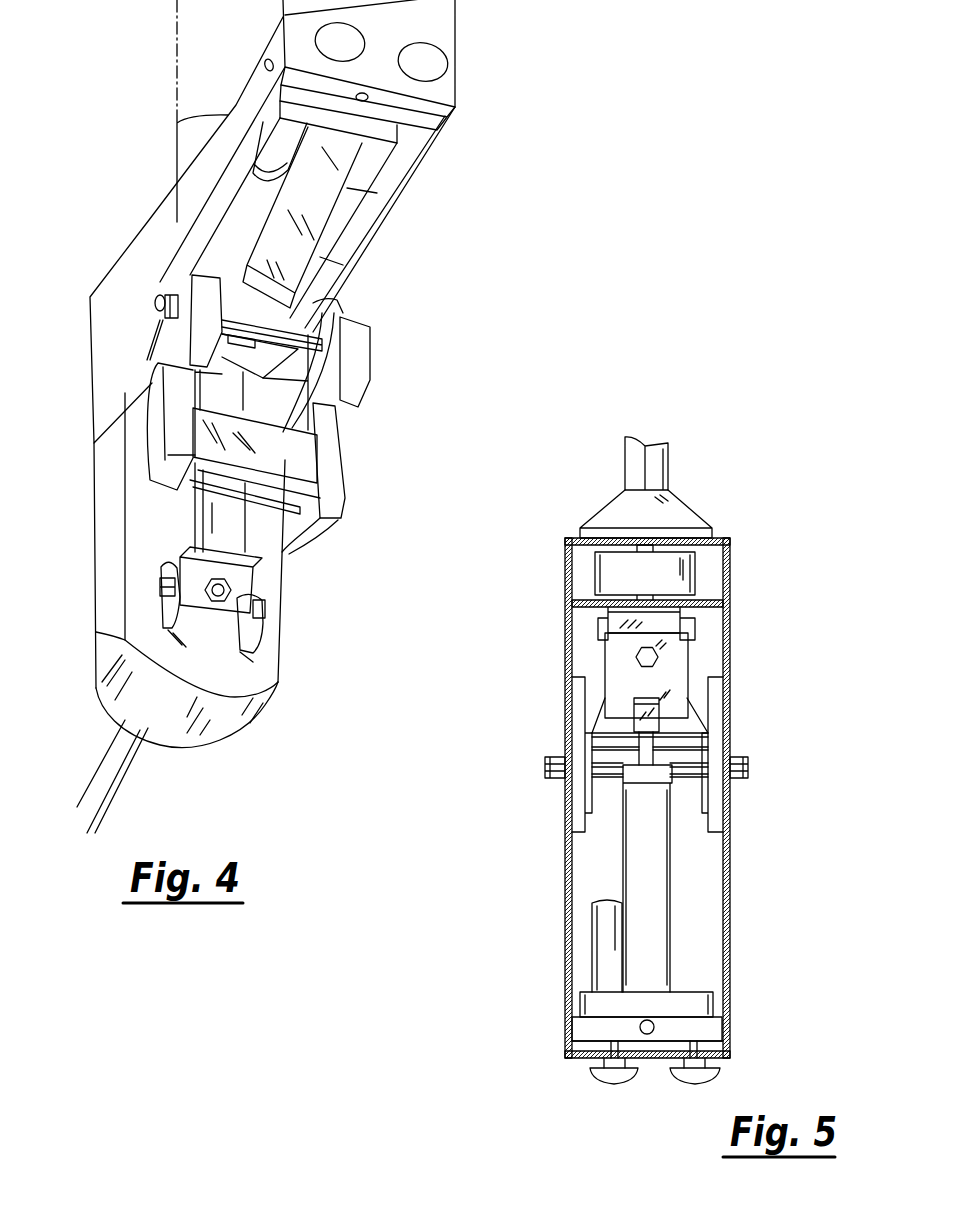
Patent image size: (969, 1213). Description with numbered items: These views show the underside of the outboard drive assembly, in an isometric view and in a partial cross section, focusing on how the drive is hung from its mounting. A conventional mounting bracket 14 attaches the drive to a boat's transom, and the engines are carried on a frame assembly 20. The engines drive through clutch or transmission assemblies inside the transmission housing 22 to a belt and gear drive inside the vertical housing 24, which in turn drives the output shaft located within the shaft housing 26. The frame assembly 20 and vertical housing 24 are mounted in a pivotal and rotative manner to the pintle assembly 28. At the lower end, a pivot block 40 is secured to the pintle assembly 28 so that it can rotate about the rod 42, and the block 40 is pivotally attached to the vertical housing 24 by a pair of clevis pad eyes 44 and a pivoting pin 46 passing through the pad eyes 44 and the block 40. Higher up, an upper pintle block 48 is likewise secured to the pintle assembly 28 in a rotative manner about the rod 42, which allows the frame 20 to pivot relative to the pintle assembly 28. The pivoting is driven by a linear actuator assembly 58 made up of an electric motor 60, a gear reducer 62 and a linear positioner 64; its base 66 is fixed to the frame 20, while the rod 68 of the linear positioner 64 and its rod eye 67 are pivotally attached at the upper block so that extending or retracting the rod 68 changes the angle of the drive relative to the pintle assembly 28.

In FIG. 4, the mounting bracket 14 is at (362, 342).
In FIG. 5, the mounting bracket 14 is at (577, 733).
In FIG. 4, the frame assembly 20 is at (468, 75).
In FIG. 5, the frame assembly 20 is at (740, 1026).
In FIG. 4, the transmission housing 22 is at (147, 220).
In FIG. 4, the vertical housing 24 is at (228, 730).
In FIG. 5, the vertical housing 24 is at (717, 538).
In FIG. 4, the shaft housing 26 is at (103, 767).
In FIG. 5, the shaft housing 26 is at (633, 455).
In FIG. 4, the pintle assembly 28 is at (278, 412).
In FIG. 4, the pivot block 40 is at (253, 567).
In FIG. 4, the rod 42 is at (280, 684).
In FIG. 5, the rod 42 is at (658, 658).
In FIG. 4, the clevis pad eyes 44 is at (178, 605).
In FIG. 4, the pivoting pin 46 is at (163, 583).
In FIG. 5, the upper pintle block 48 is at (613, 650).
In FIG. 4, the linear actuator assembly 58 is at (324, 201).
In FIG. 5, the linear actuator assembly 58 is at (680, 915).
In FIG. 5, the electric motor 60 is at (603, 940).
In FIG. 5, the gear reducer 62 is at (695, 1002).
In FIG. 5, the linear positioner 64 is at (633, 882).
In FIG. 5, the base 66 is at (580, 1027).
In FIG. 5, the rod eye 67 is at (657, 712).
In FIG. 5, the rod 68 is at (652, 743).